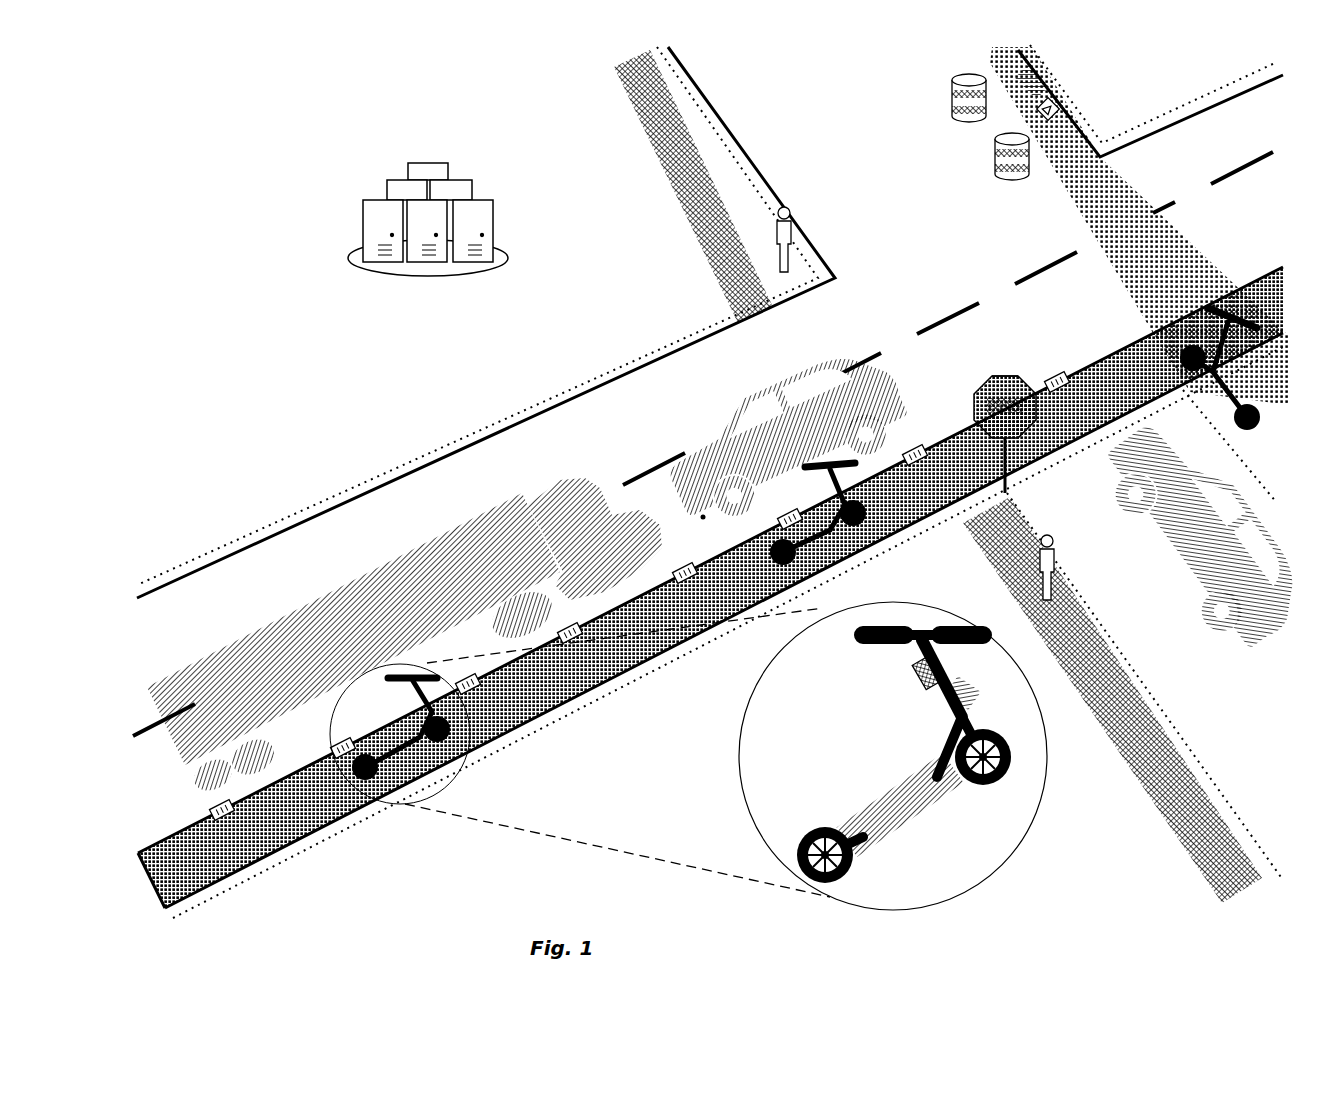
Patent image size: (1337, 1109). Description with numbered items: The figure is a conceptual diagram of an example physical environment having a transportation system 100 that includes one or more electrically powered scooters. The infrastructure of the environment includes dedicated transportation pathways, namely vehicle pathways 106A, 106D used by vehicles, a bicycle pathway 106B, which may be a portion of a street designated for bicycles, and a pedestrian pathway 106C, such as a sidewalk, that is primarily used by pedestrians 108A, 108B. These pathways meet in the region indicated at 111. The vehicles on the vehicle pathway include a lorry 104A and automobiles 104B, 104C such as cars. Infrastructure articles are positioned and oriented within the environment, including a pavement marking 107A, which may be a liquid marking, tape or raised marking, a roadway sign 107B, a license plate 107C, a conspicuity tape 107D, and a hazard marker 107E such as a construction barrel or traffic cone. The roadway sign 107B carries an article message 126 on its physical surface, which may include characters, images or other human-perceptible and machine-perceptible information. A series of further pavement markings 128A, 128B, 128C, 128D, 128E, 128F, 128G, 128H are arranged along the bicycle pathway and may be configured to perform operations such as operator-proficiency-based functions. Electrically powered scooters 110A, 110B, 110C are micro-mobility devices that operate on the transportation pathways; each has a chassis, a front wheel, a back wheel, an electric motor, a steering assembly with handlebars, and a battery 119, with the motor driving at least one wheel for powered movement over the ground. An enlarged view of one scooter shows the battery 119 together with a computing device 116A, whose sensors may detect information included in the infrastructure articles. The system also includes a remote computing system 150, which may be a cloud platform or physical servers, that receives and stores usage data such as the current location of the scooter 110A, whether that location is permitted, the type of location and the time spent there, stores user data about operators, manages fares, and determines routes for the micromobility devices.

The transportation system 100 is at (240, 296).
The remote computing system 150 is at (428, 233).
The lorry 104A is at (462, 525).
The automobile 104B is at (746, 422).
The automobile 104C is at (1190, 575).
The vehicle pathway 106A is at (288, 548).
The bicycle pathway 106B is at (240, 852).
The pedestrian pathway 106C is at (672, 152).
The vehicle pathway 106D is at (787, 115).
The pavement marking 107A is at (992, 298).
The roadway sign 107B is at (1000, 375).
The license plate 107C is at (703, 517).
The conspicuity tape 107D is at (203, 764).
The hazard marker 107E is at (952, 82).
The pedestrian 108A is at (789, 208).
The pedestrian 108B is at (1052, 540).
The electrically powered scooter 110A is at (409, 815).
The electrically powered scooter 110B is at (852, 538).
The electrically powered scooter 110C is at (1231, 283).
The intersection 111 is at (1097, 99).
The computing device 116A is at (927, 690).
The battery 119 is at (973, 694).
The article message 126 is at (983, 392).
The pavement marking 128A is at (231, 816).
The pavement marking 128B is at (344, 742).
The pavement marking 128C is at (476, 690).
The pavement marking 128D is at (572, 643).
The pavement marking 128E is at (691, 580).
The pavement marking 128F is at (789, 513).
The pavement marking 128G is at (917, 457).
The pavement marking 128H is at (1064, 387).